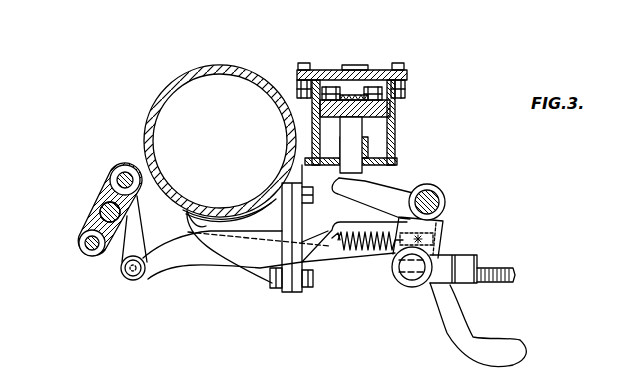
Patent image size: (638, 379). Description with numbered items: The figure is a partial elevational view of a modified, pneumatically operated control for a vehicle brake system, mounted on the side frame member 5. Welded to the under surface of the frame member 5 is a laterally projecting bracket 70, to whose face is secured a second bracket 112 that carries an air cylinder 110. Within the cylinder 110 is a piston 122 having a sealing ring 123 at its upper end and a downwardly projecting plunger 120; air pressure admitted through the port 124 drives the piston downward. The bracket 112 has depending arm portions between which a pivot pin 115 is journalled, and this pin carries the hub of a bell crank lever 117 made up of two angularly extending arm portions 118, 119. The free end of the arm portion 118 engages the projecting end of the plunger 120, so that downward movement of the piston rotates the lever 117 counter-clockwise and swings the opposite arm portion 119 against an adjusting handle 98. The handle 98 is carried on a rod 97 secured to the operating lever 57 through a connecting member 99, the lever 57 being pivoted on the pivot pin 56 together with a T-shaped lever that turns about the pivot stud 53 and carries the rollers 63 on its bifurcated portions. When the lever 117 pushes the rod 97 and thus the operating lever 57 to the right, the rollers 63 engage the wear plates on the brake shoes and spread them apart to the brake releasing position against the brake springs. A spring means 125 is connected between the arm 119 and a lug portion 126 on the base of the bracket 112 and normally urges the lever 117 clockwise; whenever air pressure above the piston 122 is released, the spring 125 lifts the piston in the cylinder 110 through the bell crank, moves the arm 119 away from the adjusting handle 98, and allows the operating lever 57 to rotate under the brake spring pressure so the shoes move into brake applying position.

The side frame member 5 is at (175, 103).
The pivot stud 53 is at (96, 211).
The pivot pin 56 is at (131, 281).
The operating lever 57 is at (197, 255).
The rollers 63 is at (124, 166).
The bracket 70 is at (262, 274).
The rod 97 is at (499, 272).
The adjusting handle 98 is at (440, 293).
The shaft 99 is at (463, 256).
The air cylinder 110 is at (364, 133).
The bracket 112 is at (409, 175).
The pivot pin 115 is at (441, 194).
The bell crank lever 117 is at (434, 183).
The arm portion 118 is at (404, 171).
The arm portion 119 is at (443, 232).
The plunger 120 is at (393, 117).
The piston 122 is at (408, 103).
The sealing ring 123 is at (388, 70).
The port 124 is at (353, 70).
The spring means 125 is at (357, 252).
The lug portion 126 is at (317, 272).